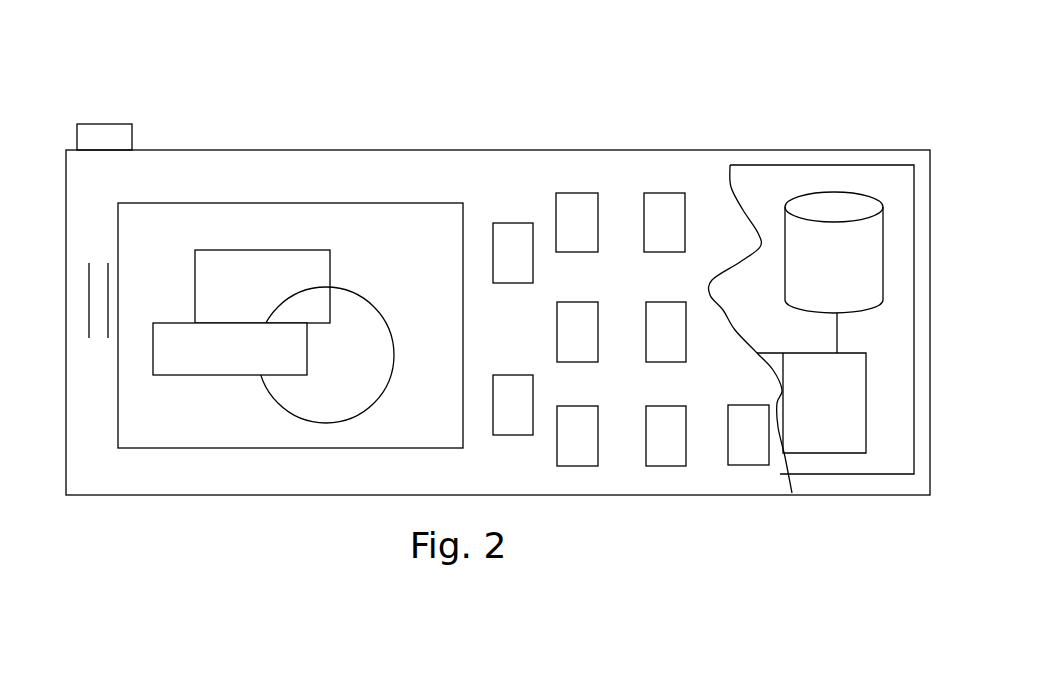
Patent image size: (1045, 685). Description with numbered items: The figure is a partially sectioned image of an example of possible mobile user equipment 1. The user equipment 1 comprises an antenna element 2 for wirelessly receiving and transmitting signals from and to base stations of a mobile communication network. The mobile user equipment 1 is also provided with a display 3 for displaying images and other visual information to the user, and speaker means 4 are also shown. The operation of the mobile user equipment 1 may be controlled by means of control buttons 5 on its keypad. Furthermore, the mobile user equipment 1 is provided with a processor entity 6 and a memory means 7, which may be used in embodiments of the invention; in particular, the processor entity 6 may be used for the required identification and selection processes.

The mobile user equipment 1 is at (226, 173).
The antenna element 2 is at (105, 139).
The display 3 is at (355, 227).
The speaker means 4 is at (97, 317).
The control buttons 5 is at (510, 243).
The processor entity 6 is at (795, 363).
The memory means 7 is at (845, 233).